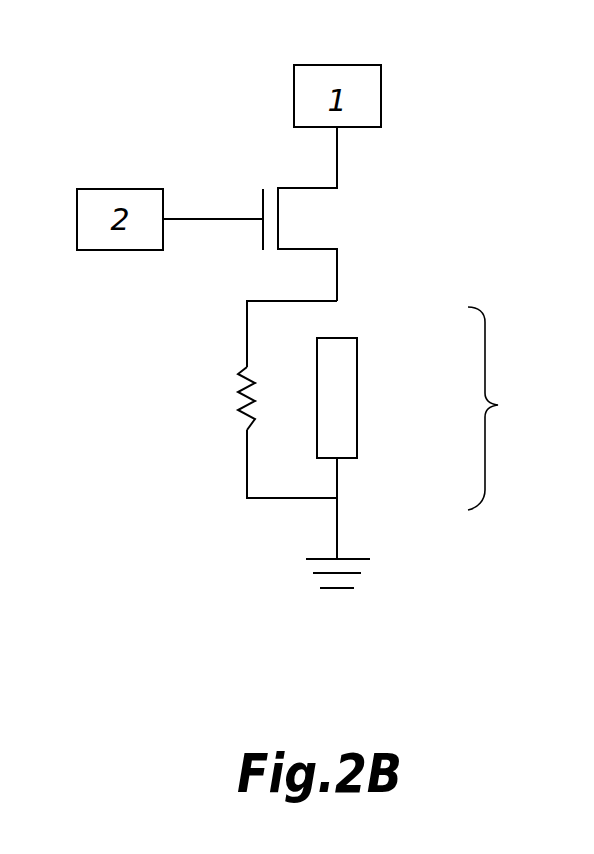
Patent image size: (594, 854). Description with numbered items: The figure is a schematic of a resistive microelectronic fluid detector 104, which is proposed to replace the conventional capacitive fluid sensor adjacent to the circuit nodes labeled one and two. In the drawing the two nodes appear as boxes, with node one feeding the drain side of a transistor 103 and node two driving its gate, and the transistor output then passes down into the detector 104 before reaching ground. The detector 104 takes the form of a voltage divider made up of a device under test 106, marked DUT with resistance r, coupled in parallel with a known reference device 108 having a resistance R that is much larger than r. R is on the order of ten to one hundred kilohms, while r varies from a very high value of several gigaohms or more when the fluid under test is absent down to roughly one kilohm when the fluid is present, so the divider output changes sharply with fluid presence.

The transistor 103 is at (347, 217).
The resistive microelectronic fluid detector 104 is at (498, 405).
The device under test (DUT) 106 is at (359, 342).
The reference device 108 is at (240, 377).